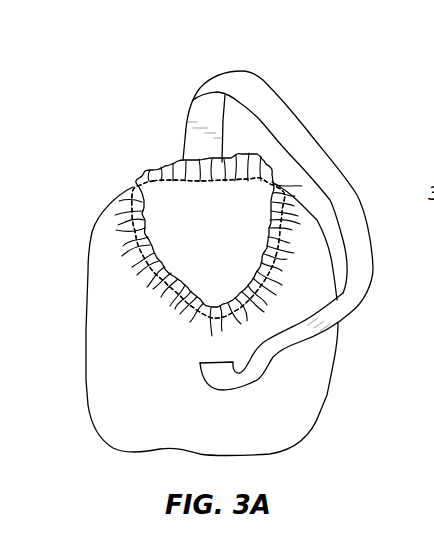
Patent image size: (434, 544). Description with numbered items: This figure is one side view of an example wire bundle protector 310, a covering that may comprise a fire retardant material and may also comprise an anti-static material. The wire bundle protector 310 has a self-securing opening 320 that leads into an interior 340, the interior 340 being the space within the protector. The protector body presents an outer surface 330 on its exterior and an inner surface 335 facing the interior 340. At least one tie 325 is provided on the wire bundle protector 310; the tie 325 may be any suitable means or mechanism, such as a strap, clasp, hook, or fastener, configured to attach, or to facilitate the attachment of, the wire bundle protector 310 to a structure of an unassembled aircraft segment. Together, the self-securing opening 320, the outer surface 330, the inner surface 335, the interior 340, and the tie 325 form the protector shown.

The wire bundle protector 310 is at (124, 109).
The self-securing opening 320 is at (132, 202).
The tie 325 is at (265, 100).
The outer surface 330 is at (108, 295).
The inner surface 335 is at (240, 204).
The interior 340 is at (227, 243).